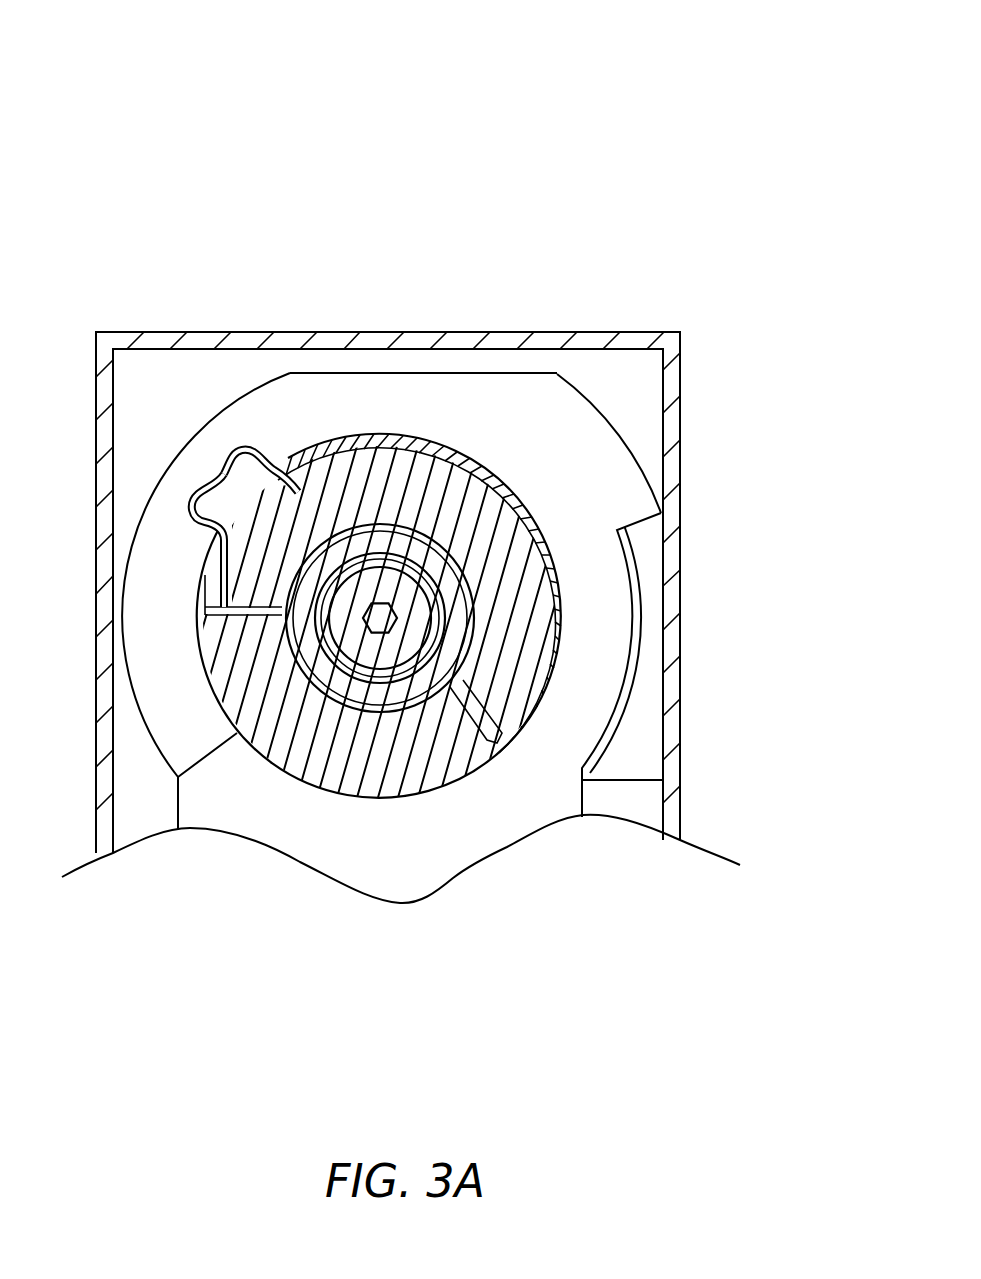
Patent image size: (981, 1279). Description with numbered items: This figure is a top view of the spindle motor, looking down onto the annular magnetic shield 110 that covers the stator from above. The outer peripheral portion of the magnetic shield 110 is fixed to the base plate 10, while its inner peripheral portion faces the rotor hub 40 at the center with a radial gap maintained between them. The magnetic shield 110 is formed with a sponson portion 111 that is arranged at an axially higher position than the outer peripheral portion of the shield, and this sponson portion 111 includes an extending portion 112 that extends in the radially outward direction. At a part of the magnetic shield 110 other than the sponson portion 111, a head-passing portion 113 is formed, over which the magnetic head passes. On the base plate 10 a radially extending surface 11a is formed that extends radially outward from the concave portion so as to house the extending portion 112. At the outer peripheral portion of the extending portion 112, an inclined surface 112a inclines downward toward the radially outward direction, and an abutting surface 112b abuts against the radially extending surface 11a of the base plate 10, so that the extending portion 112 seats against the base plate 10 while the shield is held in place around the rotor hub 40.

The base plate 10 is at (681, 334).
The radially extending surface 11a is at (290, 373).
The rotor hub 40 is at (393, 587).
The magnetic shield 110 is at (466, 788).
The sponson portion 111 is at (470, 520).
The extending portion 112 is at (171, 304).
The inclined surface 112a is at (217, 463).
The abutting surface 112b is at (197, 487).
The head-passing portion 113 is at (353, 790).